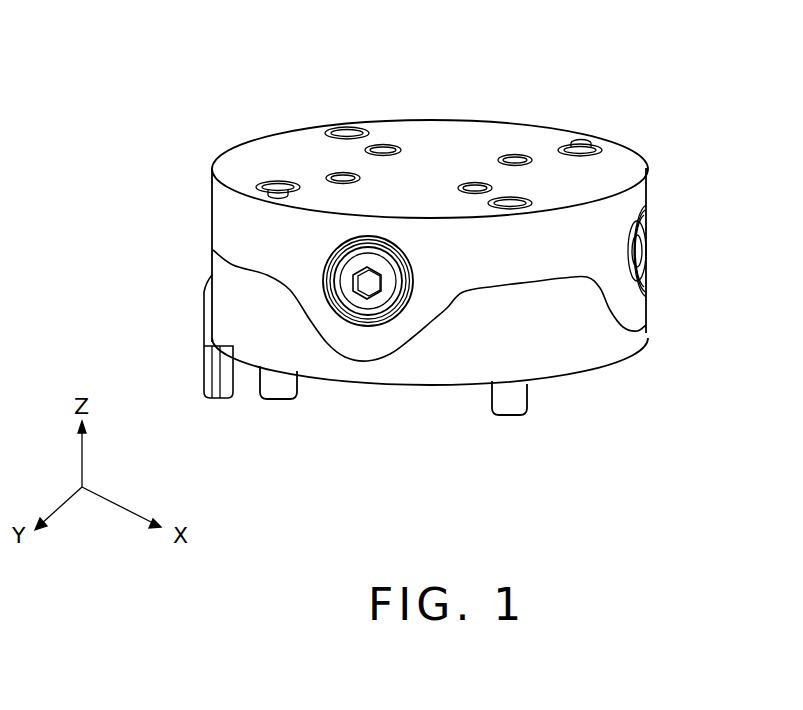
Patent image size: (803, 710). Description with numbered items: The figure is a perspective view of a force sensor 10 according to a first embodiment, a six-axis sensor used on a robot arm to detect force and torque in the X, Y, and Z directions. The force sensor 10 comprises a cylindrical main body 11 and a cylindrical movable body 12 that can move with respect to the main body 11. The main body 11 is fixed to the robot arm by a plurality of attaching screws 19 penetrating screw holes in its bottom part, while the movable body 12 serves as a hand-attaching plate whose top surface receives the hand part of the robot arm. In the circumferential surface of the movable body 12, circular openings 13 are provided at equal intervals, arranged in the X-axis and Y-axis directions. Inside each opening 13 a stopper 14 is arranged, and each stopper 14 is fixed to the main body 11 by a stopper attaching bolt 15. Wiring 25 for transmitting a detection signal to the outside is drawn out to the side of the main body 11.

The force sensor 10 is at (211, 101).
The main body 11 is at (602, 350).
The movable body 12 is at (625, 157).
The opening 13 is at (377, 332).
The stopper 14 is at (397, 250).
The stopper attaching bolt 15 is at (413, 281).
The attaching screw 19 is at (275, 395).
The wiring 25 is at (205, 376).